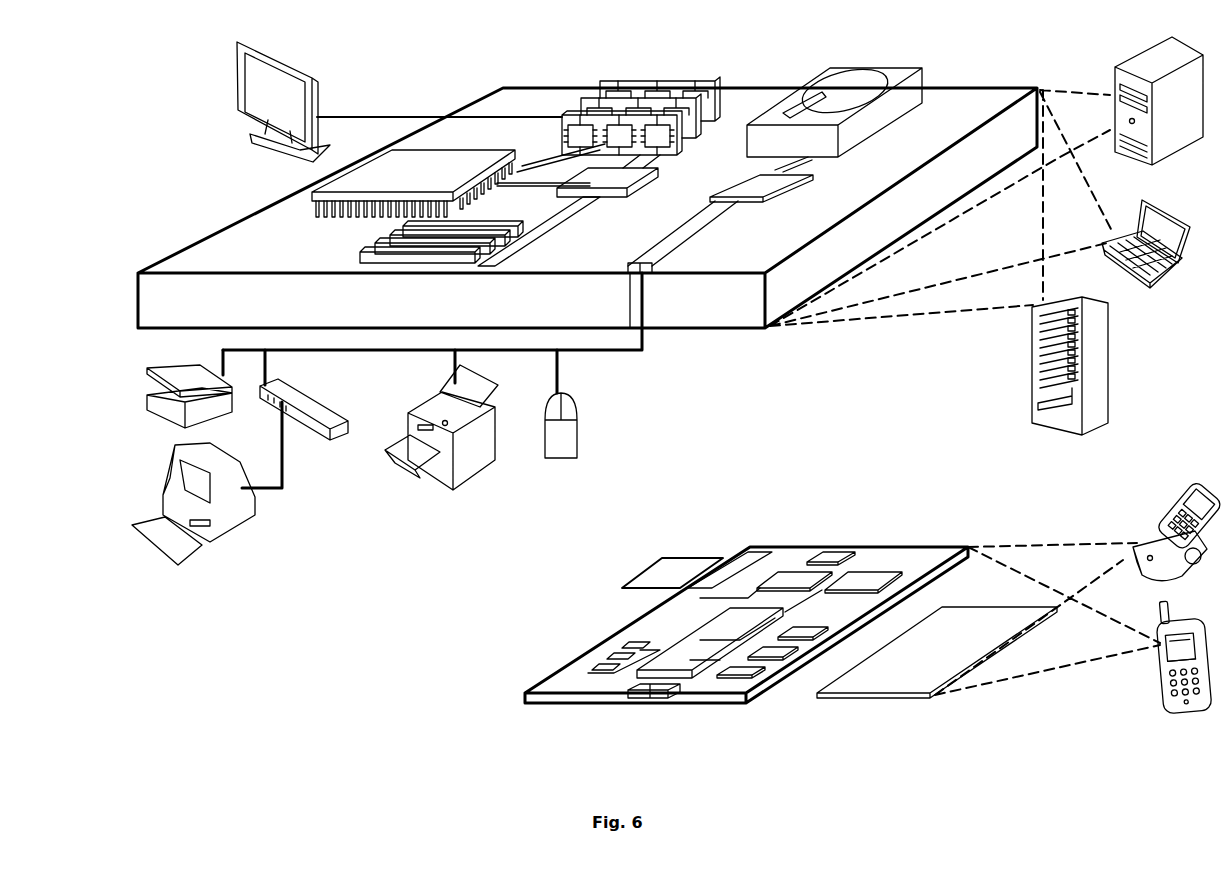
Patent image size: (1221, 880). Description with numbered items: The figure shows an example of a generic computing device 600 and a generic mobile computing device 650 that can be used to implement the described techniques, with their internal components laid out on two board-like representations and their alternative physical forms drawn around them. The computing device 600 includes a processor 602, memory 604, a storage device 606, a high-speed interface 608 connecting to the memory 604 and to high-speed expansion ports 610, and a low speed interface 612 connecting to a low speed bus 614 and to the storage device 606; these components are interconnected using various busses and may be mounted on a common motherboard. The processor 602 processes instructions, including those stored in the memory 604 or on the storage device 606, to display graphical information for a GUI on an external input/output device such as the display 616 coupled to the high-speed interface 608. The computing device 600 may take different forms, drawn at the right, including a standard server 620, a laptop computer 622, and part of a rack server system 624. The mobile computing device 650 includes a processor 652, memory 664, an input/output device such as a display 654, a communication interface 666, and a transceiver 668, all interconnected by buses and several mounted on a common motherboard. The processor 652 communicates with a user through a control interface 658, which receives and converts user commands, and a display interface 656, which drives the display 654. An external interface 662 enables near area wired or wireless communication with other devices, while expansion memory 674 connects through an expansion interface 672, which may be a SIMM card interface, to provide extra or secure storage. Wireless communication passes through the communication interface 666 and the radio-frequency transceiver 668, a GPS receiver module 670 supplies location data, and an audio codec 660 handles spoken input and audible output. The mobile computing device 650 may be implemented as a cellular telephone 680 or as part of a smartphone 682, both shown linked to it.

The computing device 600 is at (431, 66).
The processor 602 is at (312, 200).
The memory 604 is at (612, 80).
The storage device 606 is at (830, 70).
The high-speed interface 608 is at (580, 178).
The high-speed expansion ports 610 is at (375, 240).
The low speed interface 612 is at (770, 183).
The low speed bus 614 is at (657, 273).
The display 616 is at (240, 46).
The standard server 620 is at (1112, 75).
The laptop computer 622 is at (1138, 205).
The rack server system 624 is at (1032, 387).
The mobile computing device 650 is at (734, 531).
The processor 652 is at (692, 678).
The display 654 is at (935, 696).
The display interface 656 is at (757, 690).
The control interface 658 is at (794, 660).
The audio codec 660 is at (804, 640).
The external interface 662 is at (652, 698).
The memory 664 is at (610, 657).
The communication interface 666 is at (790, 582).
The transceiver 668 is at (867, 580).
The GPS receiver module 670 is at (835, 558).
The expansion interface 672 is at (722, 559).
The expansion memory 674 is at (660, 559).
The cellular telephone 680 is at (1185, 495).
The smartphone 682 is at (1168, 622).